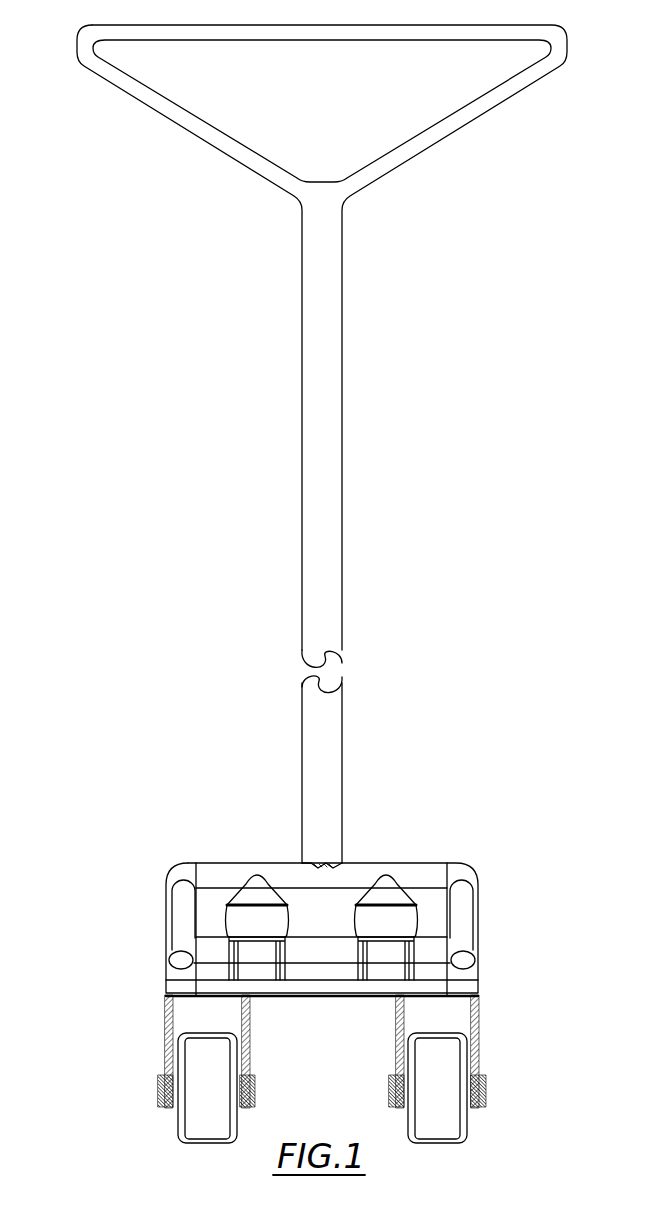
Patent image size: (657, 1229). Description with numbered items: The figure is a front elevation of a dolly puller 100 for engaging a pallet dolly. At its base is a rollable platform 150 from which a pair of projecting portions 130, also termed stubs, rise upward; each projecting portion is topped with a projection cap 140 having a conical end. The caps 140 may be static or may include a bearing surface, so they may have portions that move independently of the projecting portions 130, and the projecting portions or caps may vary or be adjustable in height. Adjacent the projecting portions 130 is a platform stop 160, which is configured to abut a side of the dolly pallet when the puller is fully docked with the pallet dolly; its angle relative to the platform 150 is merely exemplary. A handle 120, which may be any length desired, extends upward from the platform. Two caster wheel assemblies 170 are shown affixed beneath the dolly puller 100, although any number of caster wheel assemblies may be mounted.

The dolly puller 100 is at (506, 768).
The handle 120 is at (326, 593).
The projecting portions 130 is at (227, 963).
The projection cap 140 is at (242, 887).
The rollable platform 150 is at (167, 986).
The platform stop 160 is at (470, 900).
The caster wheel assemblies 170 is at (188, 1073).